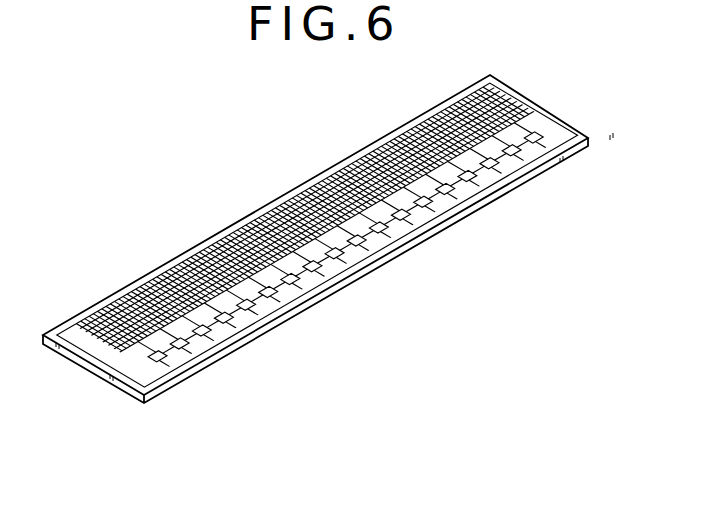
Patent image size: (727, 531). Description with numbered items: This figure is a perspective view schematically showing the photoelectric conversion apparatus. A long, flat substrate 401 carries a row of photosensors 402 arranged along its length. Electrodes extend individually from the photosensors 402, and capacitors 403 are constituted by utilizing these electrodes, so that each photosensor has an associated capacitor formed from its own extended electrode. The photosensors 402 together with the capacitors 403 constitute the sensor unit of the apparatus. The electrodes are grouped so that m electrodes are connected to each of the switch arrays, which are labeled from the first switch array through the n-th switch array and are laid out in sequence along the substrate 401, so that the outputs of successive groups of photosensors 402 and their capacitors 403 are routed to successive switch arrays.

The substrate 401 is at (567, 157).
The photosensors 402 is at (488, 94).
The capacitors 403 is at (357, 259).